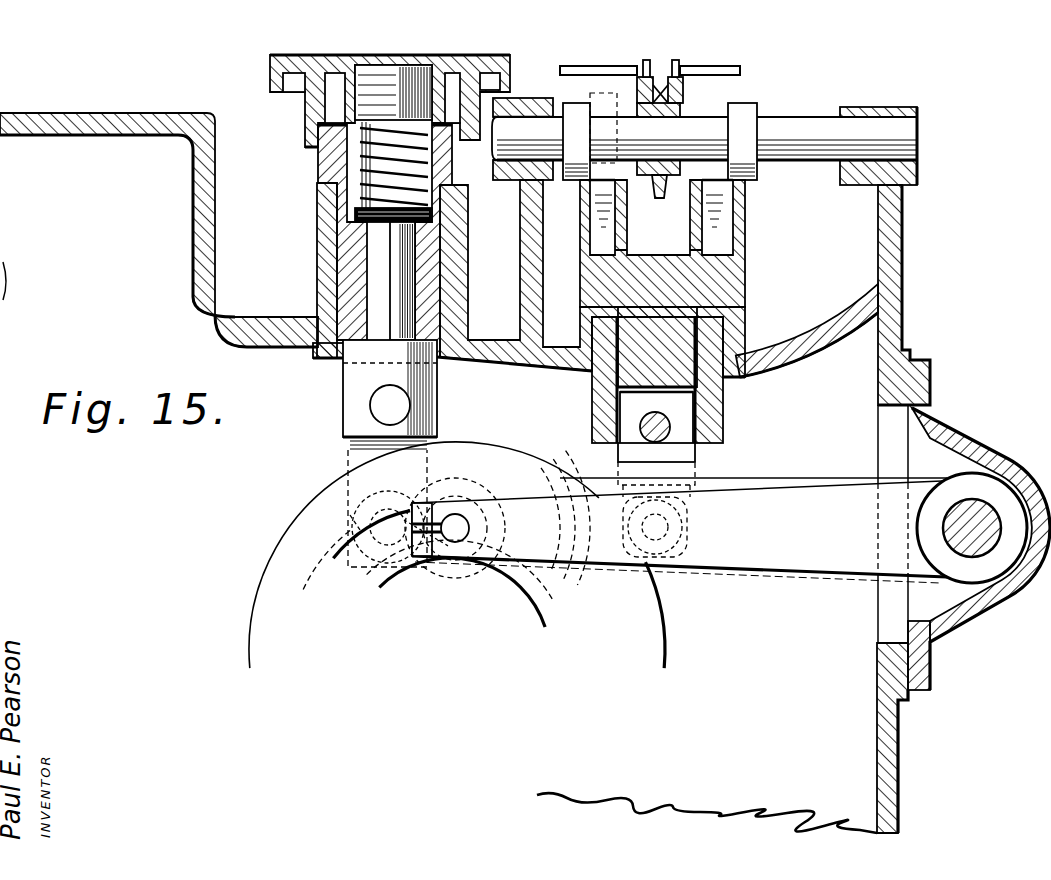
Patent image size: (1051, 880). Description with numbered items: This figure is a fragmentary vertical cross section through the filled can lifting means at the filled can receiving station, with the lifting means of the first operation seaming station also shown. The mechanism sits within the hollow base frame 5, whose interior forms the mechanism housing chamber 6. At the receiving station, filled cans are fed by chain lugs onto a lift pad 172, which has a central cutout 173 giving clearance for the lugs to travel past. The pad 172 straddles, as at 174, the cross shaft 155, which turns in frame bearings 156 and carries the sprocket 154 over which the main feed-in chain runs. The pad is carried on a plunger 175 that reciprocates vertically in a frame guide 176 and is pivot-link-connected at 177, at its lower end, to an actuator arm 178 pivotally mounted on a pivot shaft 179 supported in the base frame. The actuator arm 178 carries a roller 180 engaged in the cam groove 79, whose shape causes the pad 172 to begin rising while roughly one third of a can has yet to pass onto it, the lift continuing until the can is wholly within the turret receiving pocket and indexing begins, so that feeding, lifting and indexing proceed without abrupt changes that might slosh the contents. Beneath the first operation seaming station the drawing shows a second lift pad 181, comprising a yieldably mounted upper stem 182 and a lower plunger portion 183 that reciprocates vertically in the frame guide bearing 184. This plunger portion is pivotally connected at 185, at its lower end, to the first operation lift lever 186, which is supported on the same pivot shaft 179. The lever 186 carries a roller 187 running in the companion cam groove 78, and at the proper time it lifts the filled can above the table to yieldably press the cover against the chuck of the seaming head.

The base frame 5 is at (900, 762).
The mechanism housing chamber 6 is at (843, 712).
The cam groove 78 is at (532, 600).
The cam groove 79 is at (345, 565).
The sprocket 154 is at (680, 113).
The cross shaft 155 is at (905, 145).
The frame bearings 156 is at (575, 108).
The lift pad 172 is at (640, 70).
The central cutout 173 is at (712, 72).
The straddle portion 174 is at (728, 190).
The plunger 175 is at (680, 335).
The frame guide 176 is at (722, 415).
The pivot-link connection 177 is at (670, 470).
The actuator arm 178 is at (679, 530).
The pivot shaft 179 is at (962, 505).
The roller 180 is at (448, 560).
The lift pad 181 is at (270, 60).
The upper stem 182 is at (347, 166).
The plunger portion 183 is at (335, 346).
The frame guide bearing 184 is at (332, 214).
The pivotal connection 185 is at (382, 410).
The first operation lift lever 186 is at (352, 501).
The roller 187 is at (478, 536).